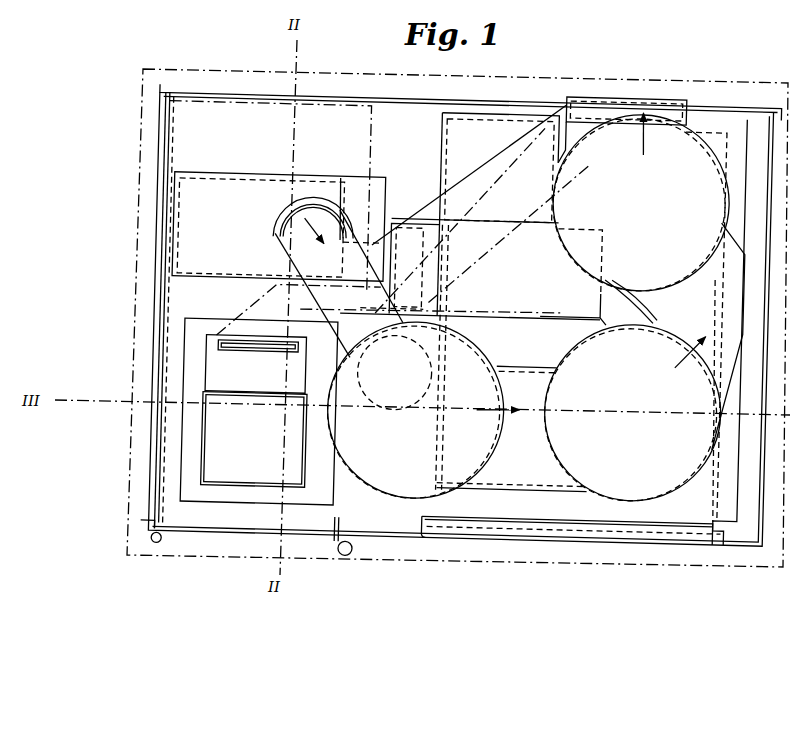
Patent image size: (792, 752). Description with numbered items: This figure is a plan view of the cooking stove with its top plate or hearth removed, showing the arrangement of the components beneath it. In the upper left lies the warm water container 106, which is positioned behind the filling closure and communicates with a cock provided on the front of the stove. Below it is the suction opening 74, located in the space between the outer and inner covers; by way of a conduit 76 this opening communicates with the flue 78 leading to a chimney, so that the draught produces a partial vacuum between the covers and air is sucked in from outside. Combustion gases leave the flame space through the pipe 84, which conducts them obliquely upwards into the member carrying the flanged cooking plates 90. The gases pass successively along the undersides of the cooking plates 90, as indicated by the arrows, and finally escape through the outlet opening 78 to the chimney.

The suction opening 74 is at (242, 350).
The conduit 76 is at (499, 173).
The flue 78 is at (647, 103).
The pipe 84 is at (347, 336).
The flanged cooking plates 90 is at (478, 462).
The warm water container 106 is at (188, 197).